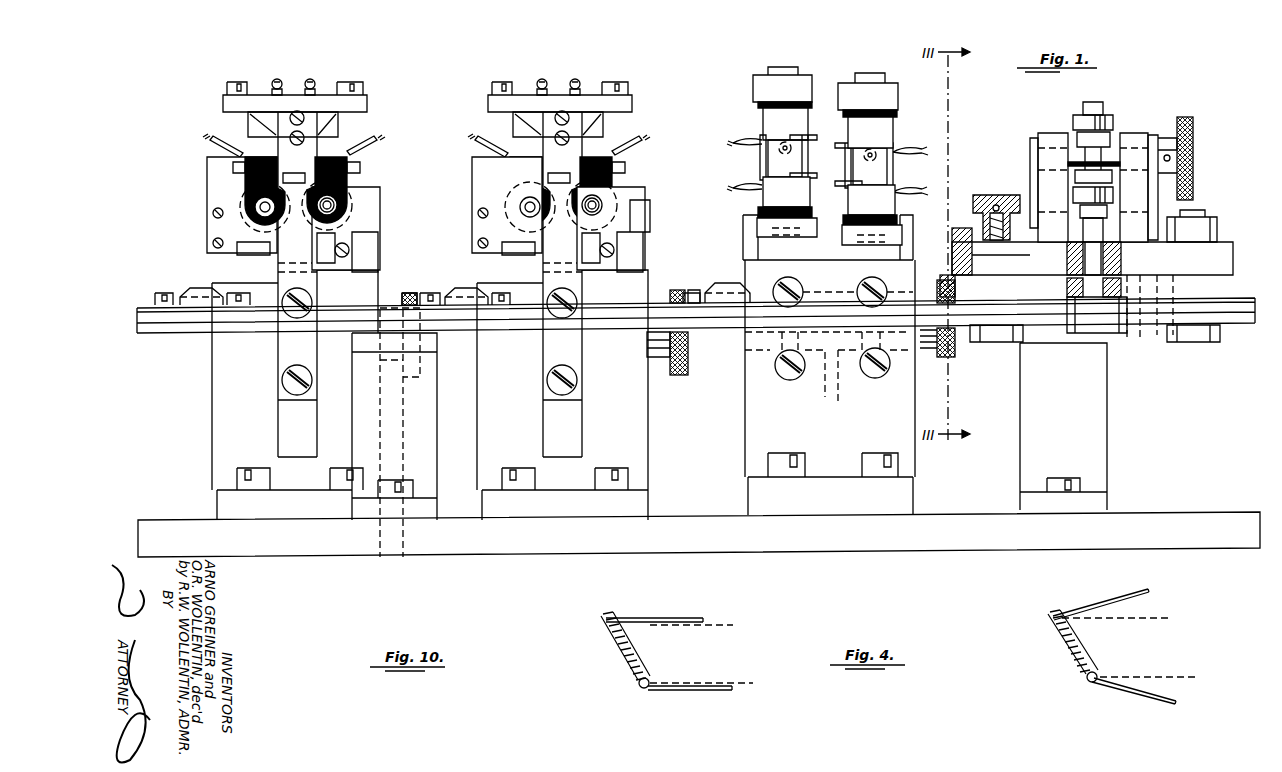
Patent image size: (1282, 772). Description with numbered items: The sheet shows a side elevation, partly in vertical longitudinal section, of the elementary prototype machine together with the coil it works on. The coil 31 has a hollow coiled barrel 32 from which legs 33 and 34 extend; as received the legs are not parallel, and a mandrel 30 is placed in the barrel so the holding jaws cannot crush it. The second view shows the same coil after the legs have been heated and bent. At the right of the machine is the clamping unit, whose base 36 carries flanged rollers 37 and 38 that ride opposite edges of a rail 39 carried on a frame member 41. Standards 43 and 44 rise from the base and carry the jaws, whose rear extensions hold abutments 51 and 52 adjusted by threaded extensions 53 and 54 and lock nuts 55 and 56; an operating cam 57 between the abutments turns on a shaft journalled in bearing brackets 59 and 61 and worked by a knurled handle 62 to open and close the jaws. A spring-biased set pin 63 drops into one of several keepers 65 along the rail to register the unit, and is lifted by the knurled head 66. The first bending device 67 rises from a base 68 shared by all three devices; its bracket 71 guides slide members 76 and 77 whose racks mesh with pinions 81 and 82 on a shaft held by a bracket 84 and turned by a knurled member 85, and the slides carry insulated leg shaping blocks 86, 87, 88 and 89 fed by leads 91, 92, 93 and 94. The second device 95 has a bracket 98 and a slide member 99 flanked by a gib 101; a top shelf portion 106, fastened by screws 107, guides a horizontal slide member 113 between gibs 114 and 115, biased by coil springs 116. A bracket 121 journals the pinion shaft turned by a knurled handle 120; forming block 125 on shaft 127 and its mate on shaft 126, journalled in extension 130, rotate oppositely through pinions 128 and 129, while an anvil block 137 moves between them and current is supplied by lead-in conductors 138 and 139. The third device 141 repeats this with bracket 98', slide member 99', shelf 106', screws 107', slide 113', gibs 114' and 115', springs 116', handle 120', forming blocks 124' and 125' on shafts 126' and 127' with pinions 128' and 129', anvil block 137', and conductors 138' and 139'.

In FIG. 10, the mandrel 30 is at (643, 690).
In FIG. 4, the mandrel 30 is at (1088, 685).
In FIG. 10, the coil 31 is at (656, 660).
In FIG. 4, the coil 31 is at (1103, 652).
In FIG. 10, the coil barrel 32 is at (622, 665).
In FIG. 4, the coil barrel 32 is at (1066, 660).
In FIG. 10, the leg 33 is at (678, 617).
In FIG. 4, the leg 33 is at (1102, 600).
In FIG. 10, the leg 34 is at (690, 691).
In FIG. 4, the leg 34 is at (1116, 694).
In FIG. 1, the base 36 is at (1228, 262).
In FIG. 1, the roller 37 is at (972, 342).
In FIG. 1, the roller 38 is at (1130, 335).
In FIG. 1, the rail 39 is at (165, 333).
In FIG. 1, the frame member 41 is at (433, 453).
In FIG. 1, the standard 43 is at (1032, 148).
In FIG. 1, the standard 44 is at (1148, 135).
In FIG. 1, the abutment 51 is at (1110, 190).
In FIG. 1, the abutment 52 is at (1105, 140).
In FIG. 1, the threaded extension 53 is at (1108, 210).
In FIG. 1, the threaded extension 54 is at (1100, 104).
In FIG. 1, the lock nut 55 is at (1078, 198).
In FIG. 1, the lock nut 56 is at (1073, 120).
In FIG. 1, the operating cam 57 is at (1075, 160).
In FIG. 1, the bearing bracket 59 is at (1048, 176).
In FIG. 1, the bearing bracket 61 is at (1150, 148).
In FIG. 1, the knurled handle 62 is at (1193, 168).
In FIG. 1, the set pin 63 is at (955, 243).
In FIG. 1, the keeper 65 is at (180, 288).
In FIG. 1, the knurled head 66 is at (975, 195).
In FIG. 1, the first device 67 is at (744, 80).
In FIG. 1, the base 68 is at (688, 520).
In FIG. 1, the bracket 71 is at (755, 432).
In FIG. 1, the slide member 76 is at (900, 235).
In FIG. 1, the slide member 77 is at (760, 226).
In FIG. 1, the pinion 81 is at (892, 365).
In FIG. 1, the pinion 82 is at (752, 350).
In FIG. 1, the bracket 84 is at (840, 380).
In FIG. 1, the knurled member 85 is at (942, 360).
In FIG. 1, the leg shaping block 86 is at (840, 128).
In FIG. 1, the leg shaping block 87 is at (800, 128).
In FIG. 1, the leg shaping block 88 is at (848, 160).
In FIG. 1, the leg shaping block 89 is at (775, 192).
In FIG. 1, the lead 91 is at (905, 147).
In FIG. 1, the lead 92 is at (736, 138).
In FIG. 1, the lead 93 is at (905, 188).
In FIG. 1, the lead 94 is at (736, 185).
In FIG. 1, the second device 95 is at (541, 80).
In FIG. 1, the bracket 98 is at (580, 395).
In FIG. 1, the bracket 98' is at (278, 395).
In FIG. 1, the slide member 99 is at (623, 238).
In FIG. 1, the slide member 99' is at (362, 252).
In FIG. 1, the gib 101 is at (652, 236).
In FIG. 1, the top shelf portion 106 is at (596, 99).
In FIG. 1, the top shelf portion 106' is at (327, 99).
In FIG. 1, the screw 107 is at (578, 68).
In FIG. 1, the screw 107' is at (296, 72).
In FIG. 1, the slide member 113 is at (598, 77).
In FIG. 1, the slide member 113' is at (208, 124).
In FIG. 1, the gib 114 is at (483, 108).
In FIG. 1, the gib 114' is at (199, 106).
In FIG. 1, the gib 115 is at (610, 133).
In FIG. 1, the gib 115' is at (357, 126).
In FIG. 1, the coil spring 116 is at (558, 70).
In FIG. 1, the coil spring 116' is at (294, 72).
In FIG. 1, the knurled handle 120 is at (679, 347).
In FIG. 1, the knurled handle 120' is at (403, 432).
In FIG. 1, the bracket 121 is at (476, 138).
In FIG. 1, the coil leg forming block 124' is at (199, 144).
In FIG. 1, the coil leg forming block 125 is at (623, 188).
In FIG. 1, the coil leg forming block 125' is at (356, 126).
In FIG. 1, the shaft 126 is at (494, 207).
In FIG. 1, the shaft 126' is at (252, 196).
In FIG. 1, the shaft 127 is at (623, 205).
In FIG. 1, the shaft 127' is at (374, 220).
In FIG. 1, the pinion 128 is at (486, 206).
In FIG. 1, the pinion 128' is at (212, 206).
In FIG. 1, the pinion 129 is at (627, 222).
In FIG. 1, the pinion 129' is at (363, 227).
In FIG. 1, the extension 130 is at (585, 315).
In FIG. 1, the anvil block 137 is at (621, 133).
In FIG. 1, the anvil block 137' is at (299, 315).
In FIG. 1, the lead-in conductor 138 is at (527, 191).
In FIG. 1, the lead-in conductor 138' is at (252, 190).
In FIG. 1, the lead-in conductor 139 is at (657, 144).
In FIG. 1, the lead-in conductor 139' is at (376, 153).
In FIG. 1, the third device 141 is at (214, 89).